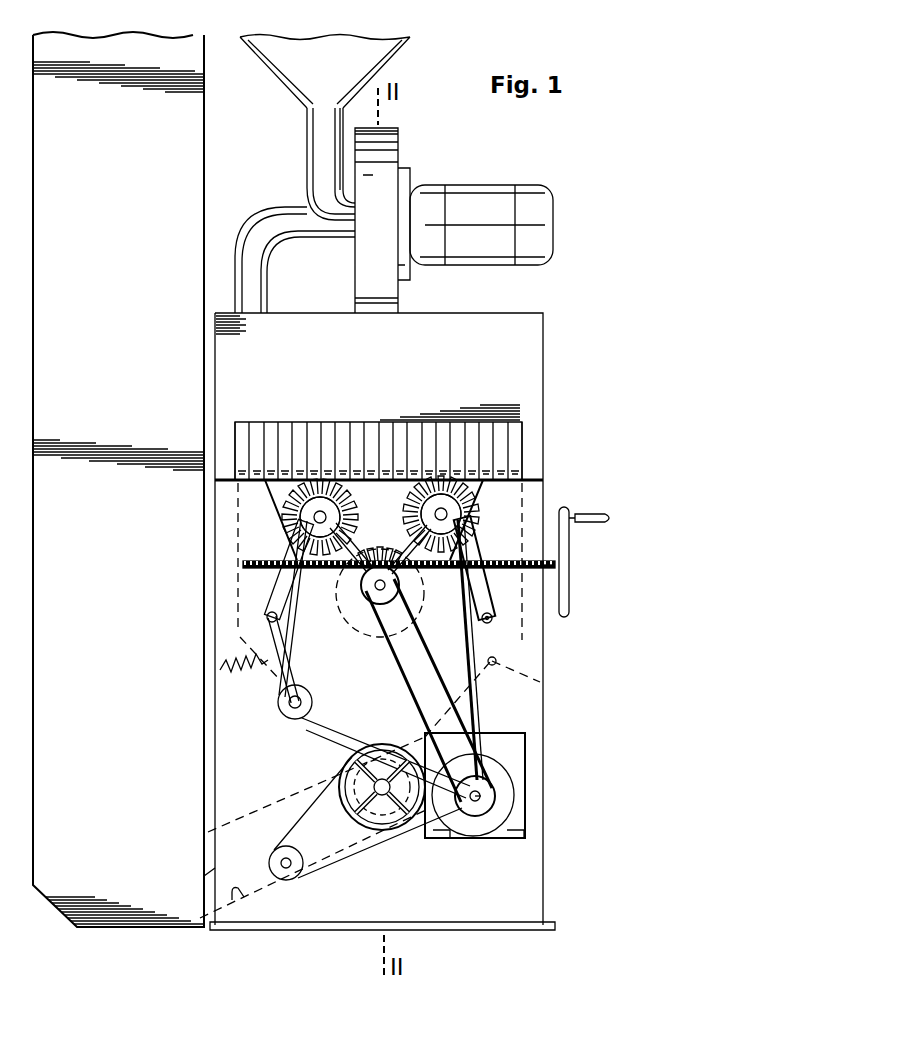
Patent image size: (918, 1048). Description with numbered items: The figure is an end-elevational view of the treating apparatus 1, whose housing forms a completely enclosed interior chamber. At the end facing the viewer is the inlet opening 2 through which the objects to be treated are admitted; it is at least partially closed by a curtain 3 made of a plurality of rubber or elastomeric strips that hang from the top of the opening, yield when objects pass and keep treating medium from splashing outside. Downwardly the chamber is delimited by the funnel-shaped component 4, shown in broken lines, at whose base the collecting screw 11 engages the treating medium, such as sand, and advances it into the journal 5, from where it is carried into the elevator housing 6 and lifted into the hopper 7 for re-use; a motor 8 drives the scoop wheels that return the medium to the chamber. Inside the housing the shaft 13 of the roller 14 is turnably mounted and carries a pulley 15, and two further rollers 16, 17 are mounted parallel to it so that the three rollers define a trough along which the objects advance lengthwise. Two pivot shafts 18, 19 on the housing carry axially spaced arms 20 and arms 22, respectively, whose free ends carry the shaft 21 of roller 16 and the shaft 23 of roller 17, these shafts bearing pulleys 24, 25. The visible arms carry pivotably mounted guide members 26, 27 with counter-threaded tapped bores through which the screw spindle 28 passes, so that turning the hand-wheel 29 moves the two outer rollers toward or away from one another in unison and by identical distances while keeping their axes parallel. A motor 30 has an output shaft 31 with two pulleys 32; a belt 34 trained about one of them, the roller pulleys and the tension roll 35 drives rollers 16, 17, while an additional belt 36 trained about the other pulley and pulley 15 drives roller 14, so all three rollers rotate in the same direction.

The apparatus 1 is at (545, 353).
The inlet opening 2 is at (483, 490).
The curtain 3 is at (258, 440).
The funnel-shaped component 4 is at (540, 683).
The journal 5 is at (236, 900).
The elevator housing 6 is at (150, 898).
The hopper 7 is at (366, 52).
The motor 8 is at (530, 203).
The collecting screw 11 is at (356, 762).
The shaft 13 is at (372, 617).
The roller 14 is at (378, 546).
The pulley 15 is at (376, 586).
The roller 16 is at (316, 482).
The roller 17 is at (448, 478).
The pivot shaft 18 is at (266, 620).
The pivot shaft 19 is at (497, 648).
The arms 20 is at (266, 602).
The shaft 21 is at (305, 514).
The arms 22 is at (495, 612).
The shaft 23 is at (447, 513).
The pulley 24 is at (318, 527).
The pulley 25 is at (455, 520).
The guide member 26 is at (287, 580).
The guide member 27 is at (482, 560).
The screw spindle 28 is at (540, 572).
The hand-wheel 29 is at (567, 560).
The motor 30 is at (497, 785).
The output shaft 31 is at (489, 808).
The pulleys 32 is at (523, 838).
The belt 34 is at (485, 700).
The tension roll 35 is at (278, 710).
The belt 36 is at (410, 640).